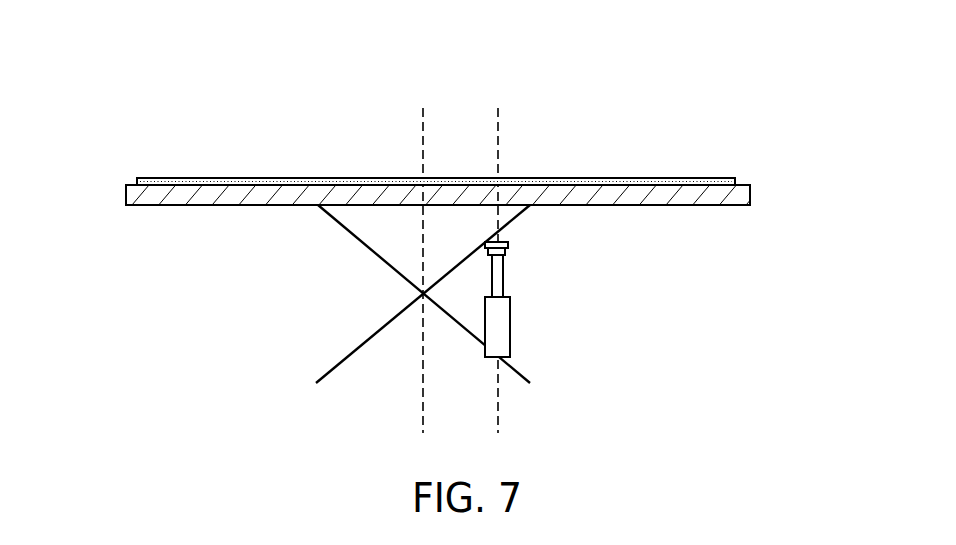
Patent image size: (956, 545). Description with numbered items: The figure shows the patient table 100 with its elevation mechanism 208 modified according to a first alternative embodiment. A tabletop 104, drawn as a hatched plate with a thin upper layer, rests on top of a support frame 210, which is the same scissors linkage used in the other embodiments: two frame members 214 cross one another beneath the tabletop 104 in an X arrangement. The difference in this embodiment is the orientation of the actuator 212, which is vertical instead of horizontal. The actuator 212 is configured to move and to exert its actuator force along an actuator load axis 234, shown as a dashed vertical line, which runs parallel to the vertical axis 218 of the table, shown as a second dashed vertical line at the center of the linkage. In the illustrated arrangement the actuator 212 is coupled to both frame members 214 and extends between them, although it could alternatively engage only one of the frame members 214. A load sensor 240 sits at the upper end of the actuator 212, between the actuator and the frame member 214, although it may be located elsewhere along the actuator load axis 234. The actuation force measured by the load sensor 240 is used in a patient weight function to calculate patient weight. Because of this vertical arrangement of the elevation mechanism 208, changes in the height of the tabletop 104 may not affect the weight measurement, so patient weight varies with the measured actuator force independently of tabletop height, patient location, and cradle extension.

The patient table 100 is at (166, 105).
The tabletop 104 is at (757, 205).
The elevation mechanism 208 is at (569, 290).
The support frame 210 is at (385, 294).
The actuator 212 is at (512, 320).
The frame members 214 is at (345, 229).
The vertical axis 218 is at (422, 128).
The actuator load axis 234 is at (500, 130).
The load sensor 240 is at (510, 243).